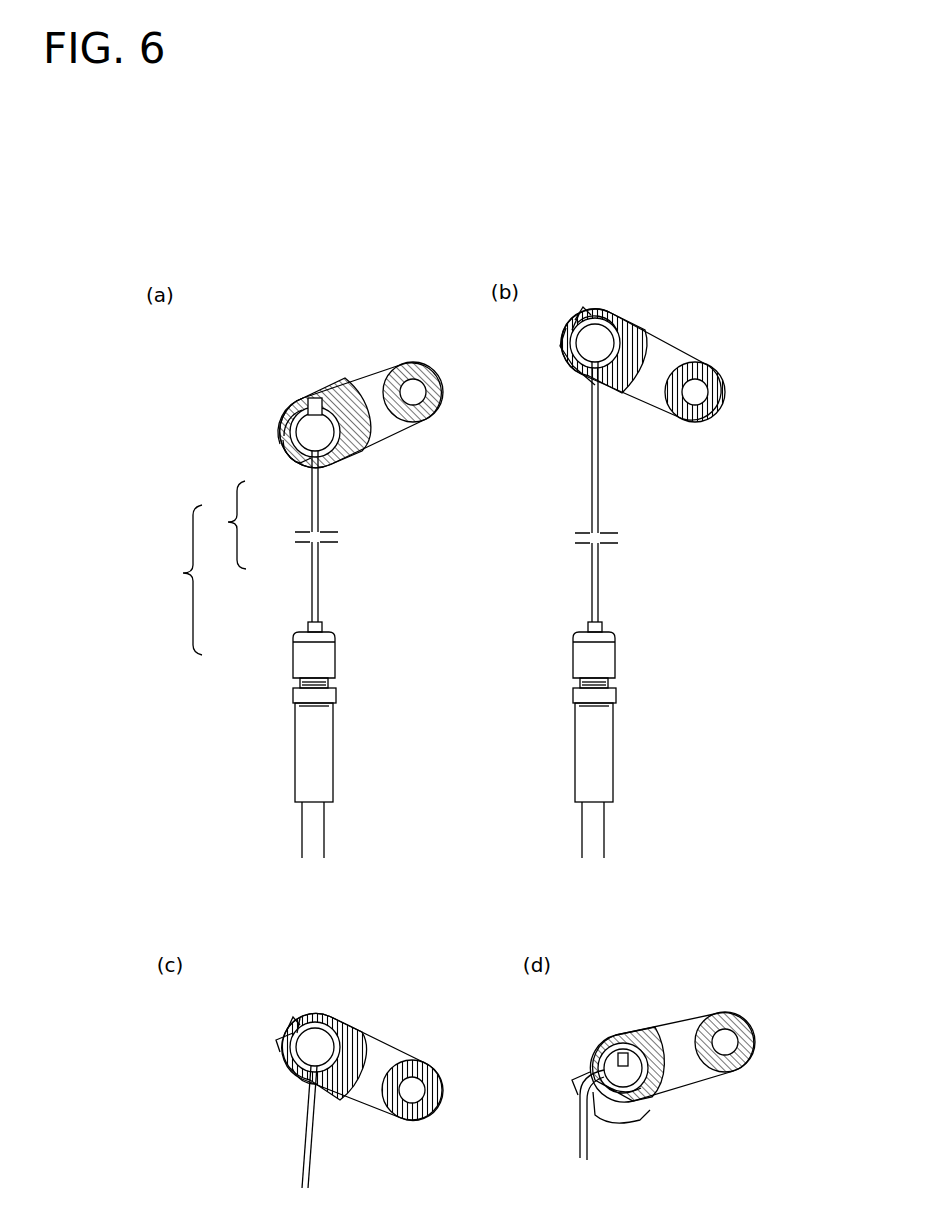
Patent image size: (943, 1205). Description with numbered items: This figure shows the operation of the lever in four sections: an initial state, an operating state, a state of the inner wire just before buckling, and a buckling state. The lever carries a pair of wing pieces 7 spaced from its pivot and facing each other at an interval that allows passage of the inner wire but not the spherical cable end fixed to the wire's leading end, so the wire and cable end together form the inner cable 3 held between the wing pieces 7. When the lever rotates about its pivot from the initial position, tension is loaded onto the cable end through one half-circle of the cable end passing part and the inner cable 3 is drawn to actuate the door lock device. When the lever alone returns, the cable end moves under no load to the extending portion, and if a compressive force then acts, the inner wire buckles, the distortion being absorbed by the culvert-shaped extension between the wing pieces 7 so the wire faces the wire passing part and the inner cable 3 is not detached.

The inner cable 3 is at (224, 525).
The wing pieces 7 is at (313, 396).